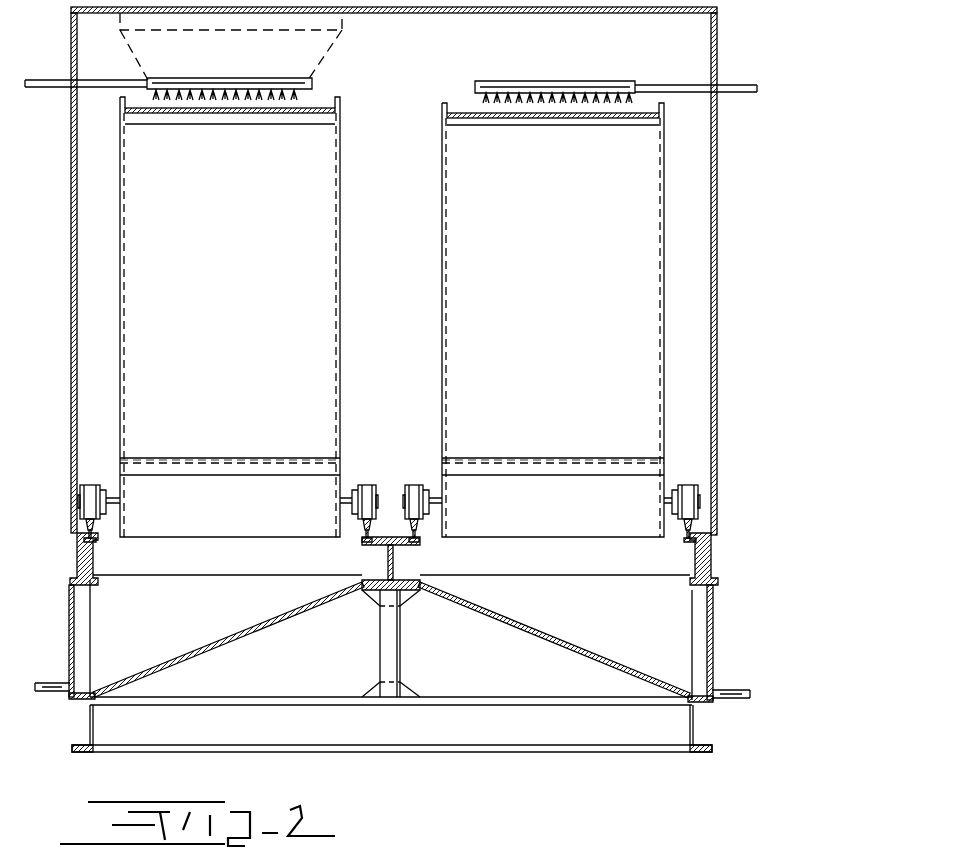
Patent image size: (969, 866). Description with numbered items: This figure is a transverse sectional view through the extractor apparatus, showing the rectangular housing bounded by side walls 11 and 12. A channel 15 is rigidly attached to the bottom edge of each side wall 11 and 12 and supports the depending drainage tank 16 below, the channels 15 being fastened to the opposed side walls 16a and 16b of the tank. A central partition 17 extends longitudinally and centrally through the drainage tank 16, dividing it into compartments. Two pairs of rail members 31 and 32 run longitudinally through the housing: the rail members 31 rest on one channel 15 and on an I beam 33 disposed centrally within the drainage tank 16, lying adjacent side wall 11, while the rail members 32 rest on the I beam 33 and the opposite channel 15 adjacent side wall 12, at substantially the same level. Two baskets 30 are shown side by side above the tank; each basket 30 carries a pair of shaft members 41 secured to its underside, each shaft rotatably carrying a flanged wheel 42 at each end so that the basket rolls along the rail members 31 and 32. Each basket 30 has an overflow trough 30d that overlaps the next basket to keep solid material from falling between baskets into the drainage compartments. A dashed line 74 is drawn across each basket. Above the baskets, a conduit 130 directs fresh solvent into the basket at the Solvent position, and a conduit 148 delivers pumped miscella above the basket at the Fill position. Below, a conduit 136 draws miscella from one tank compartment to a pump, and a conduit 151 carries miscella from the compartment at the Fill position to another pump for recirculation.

The side wall 11 is at (71, 380).
The side wall 12 is at (717, 332).
The conduit 130 is at (36, 80).
The conduit 148 is at (738, 85).
The basket 30 is at (341, 258).
The overflow trough 30d is at (216, 113).
The tank partition level 74 is at (258, 458).
The shaft member 41 is at (108, 486).
The flanged wheel 42 is at (410, 486).
The rail member 31 is at (96, 540).
The rail member 32 is at (420, 540).
The I beam 33 is at (388, 562).
The channel 15 is at (77, 564).
The drainage tank 16 is at (45, 626).
The side wall 16a is at (69, 602).
The side wall 16b is at (713, 612).
The central partition 17 is at (400, 634).
The conduit 136 is at (52, 683).
The conduit 151 is at (742, 690).